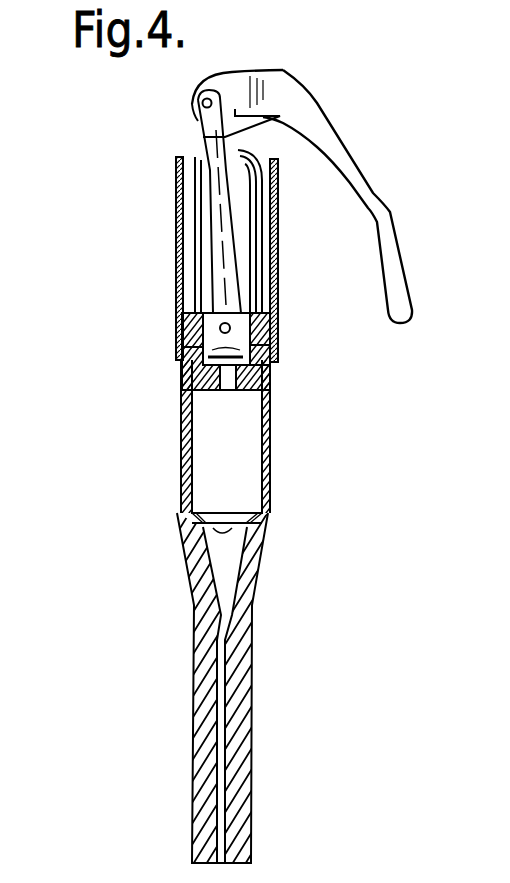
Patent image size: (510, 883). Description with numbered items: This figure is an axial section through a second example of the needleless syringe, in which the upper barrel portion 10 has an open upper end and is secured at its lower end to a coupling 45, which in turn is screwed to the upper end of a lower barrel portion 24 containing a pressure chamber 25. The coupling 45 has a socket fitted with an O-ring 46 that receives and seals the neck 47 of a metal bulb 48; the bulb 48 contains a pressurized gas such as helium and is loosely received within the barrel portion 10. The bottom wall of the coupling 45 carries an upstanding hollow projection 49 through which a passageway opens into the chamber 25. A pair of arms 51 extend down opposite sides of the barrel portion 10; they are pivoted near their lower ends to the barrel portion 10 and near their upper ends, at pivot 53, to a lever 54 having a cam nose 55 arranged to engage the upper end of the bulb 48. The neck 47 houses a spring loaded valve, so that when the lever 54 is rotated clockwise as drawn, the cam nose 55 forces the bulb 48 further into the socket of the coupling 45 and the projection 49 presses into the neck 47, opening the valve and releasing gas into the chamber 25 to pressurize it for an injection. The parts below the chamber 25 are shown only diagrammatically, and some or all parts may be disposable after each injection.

The upper barrel portion 10 is at (176, 249).
The lower barrel portion 24 is at (270, 442).
The pressure chamber 25 is at (232, 478).
The coupling 45 is at (277, 358).
The O-ring 46 is at (177, 344).
The neck 47 is at (270, 322).
The metal bulb 48 is at (272, 246).
The upstanding projection 49 is at (178, 392).
The arms 51 is at (212, 172).
The pivot 53 is at (199, 102).
The lever 54 is at (325, 138).
The latch cam 55 is at (264, 115).